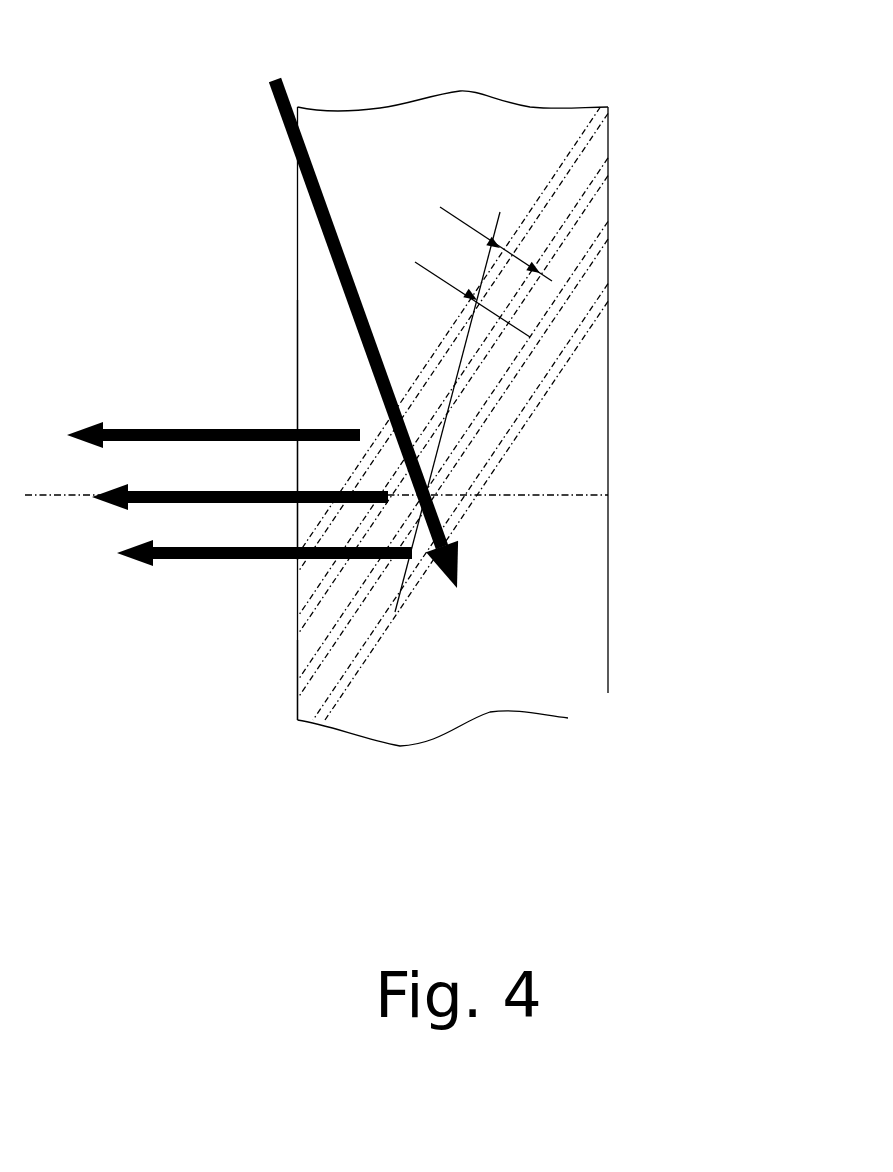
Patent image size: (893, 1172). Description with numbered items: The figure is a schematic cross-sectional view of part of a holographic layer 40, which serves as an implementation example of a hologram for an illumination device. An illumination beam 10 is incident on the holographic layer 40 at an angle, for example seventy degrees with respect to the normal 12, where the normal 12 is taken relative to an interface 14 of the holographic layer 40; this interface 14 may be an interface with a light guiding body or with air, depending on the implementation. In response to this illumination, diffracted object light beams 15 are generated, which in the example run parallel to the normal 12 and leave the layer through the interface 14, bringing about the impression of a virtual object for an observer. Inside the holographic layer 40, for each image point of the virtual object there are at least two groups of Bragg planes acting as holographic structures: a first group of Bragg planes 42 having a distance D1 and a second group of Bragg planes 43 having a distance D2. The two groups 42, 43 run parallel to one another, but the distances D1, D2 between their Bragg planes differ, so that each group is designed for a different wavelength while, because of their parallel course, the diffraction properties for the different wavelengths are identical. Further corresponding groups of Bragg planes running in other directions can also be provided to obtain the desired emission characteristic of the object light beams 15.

The illumination beam 10 is at (284, 82).
The normal 12 is at (568, 506).
The interface 14 is at (294, 418).
The object light beams 15 is at (266, 560).
The holographic layer 40 is at (455, 97).
The first group of Bragg planes 42 is at (401, 612).
The second group of Bragg planes 43 is at (318, 697).
The distance D1 is at (543, 267).
The distance D2 is at (507, 324).